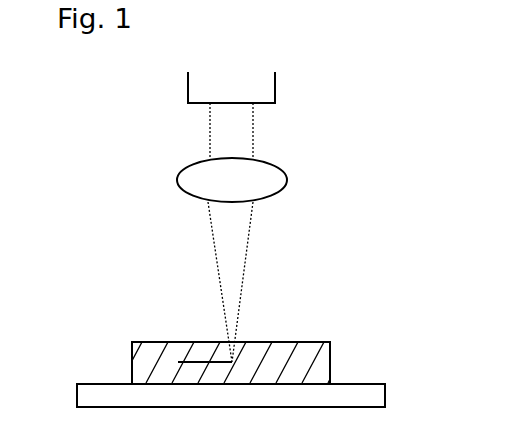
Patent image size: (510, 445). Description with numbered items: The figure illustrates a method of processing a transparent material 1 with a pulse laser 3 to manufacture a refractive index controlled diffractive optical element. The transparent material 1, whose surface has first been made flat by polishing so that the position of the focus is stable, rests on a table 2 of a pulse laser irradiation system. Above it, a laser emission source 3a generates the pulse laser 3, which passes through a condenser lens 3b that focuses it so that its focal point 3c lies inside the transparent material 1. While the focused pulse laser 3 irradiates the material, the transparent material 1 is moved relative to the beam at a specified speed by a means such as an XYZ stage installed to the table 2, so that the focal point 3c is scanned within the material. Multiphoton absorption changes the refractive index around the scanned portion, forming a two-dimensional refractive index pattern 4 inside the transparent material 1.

The transparent material 1 is at (263, 360).
The table 2 is at (342, 395).
The pulse laser 3 is at (215, 136).
The laser emission source 3a is at (276, 103).
The condenser lens 3b is at (254, 179).
The focal point 3c is at (215, 347).
The refractive index pattern 4 is at (173, 353).